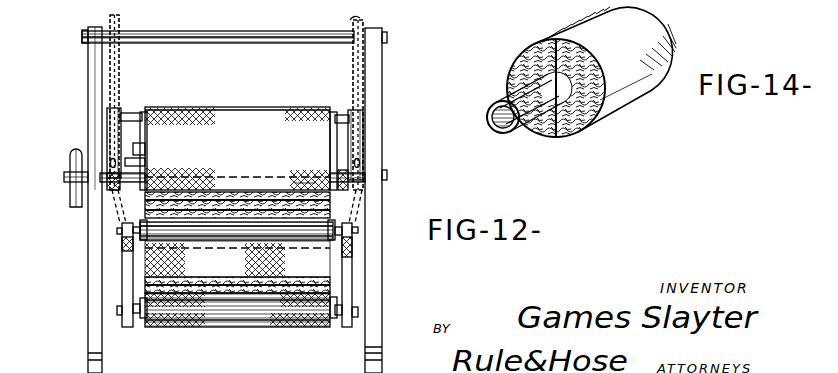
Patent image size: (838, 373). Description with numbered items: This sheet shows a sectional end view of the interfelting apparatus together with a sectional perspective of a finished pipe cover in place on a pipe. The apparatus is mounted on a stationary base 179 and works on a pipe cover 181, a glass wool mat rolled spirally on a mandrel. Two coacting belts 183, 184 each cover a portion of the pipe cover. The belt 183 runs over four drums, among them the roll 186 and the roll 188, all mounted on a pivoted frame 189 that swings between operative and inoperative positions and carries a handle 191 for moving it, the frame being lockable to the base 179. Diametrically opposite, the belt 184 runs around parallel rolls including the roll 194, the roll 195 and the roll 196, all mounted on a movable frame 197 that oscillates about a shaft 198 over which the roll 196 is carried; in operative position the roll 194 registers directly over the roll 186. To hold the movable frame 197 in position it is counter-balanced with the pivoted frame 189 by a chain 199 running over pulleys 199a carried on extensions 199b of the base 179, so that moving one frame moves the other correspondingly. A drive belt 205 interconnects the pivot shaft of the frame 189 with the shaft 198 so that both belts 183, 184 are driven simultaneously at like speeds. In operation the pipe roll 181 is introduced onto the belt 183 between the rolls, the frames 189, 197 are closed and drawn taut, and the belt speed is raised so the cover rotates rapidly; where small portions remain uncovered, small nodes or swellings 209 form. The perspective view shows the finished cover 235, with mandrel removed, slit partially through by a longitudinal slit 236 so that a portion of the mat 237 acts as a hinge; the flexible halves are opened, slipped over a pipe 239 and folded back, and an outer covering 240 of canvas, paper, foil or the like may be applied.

In FIG. 12, the stationary base 179 is at (95, 331).
In FIG. 12, the pulleys 199a is at (118, 25).
In FIG. 12, the chain 199 is at (116, 70).
In FIG. 12, the extensions 199b is at (97, 80).
In FIG. 12, the movable frame 197 is at (112, 137).
In FIG. 12, the handle 191 is at (361, 163).
In FIG. 12, the drive belt 205 is at (76, 148).
In FIG. 12, the shaft 198 is at (66, 172).
In FIG. 12, the roll 195 is at (141, 108).
In FIG. 12, the belt 184 is at (268, 90).
In FIG. 12, the roll 196 is at (146, 148).
In FIG. 12, the roll 194 is at (144, 162).
In FIG. 12, the nodes 209 is at (265, 170).
In FIG. 12, the pipe cover 181 is at (303, 183).
In FIG. 12, the roll 186 is at (237, 235).
In FIG. 12, the belt 183 is at (227, 323).
In FIG. 12, the roll 188 is at (143, 323).
In FIG. 12, the pivoted frame 189 is at (125, 288).
In FIG. 14, the covering 240 is at (672, 55).
In FIG. 14, the slit 236 is at (590, 48).
In FIG. 14, the mat 237 is at (549, 133).
In FIG. 14, the pipe 239 is at (500, 133).
In FIG. 14, the cover 235 is at (627, 92).